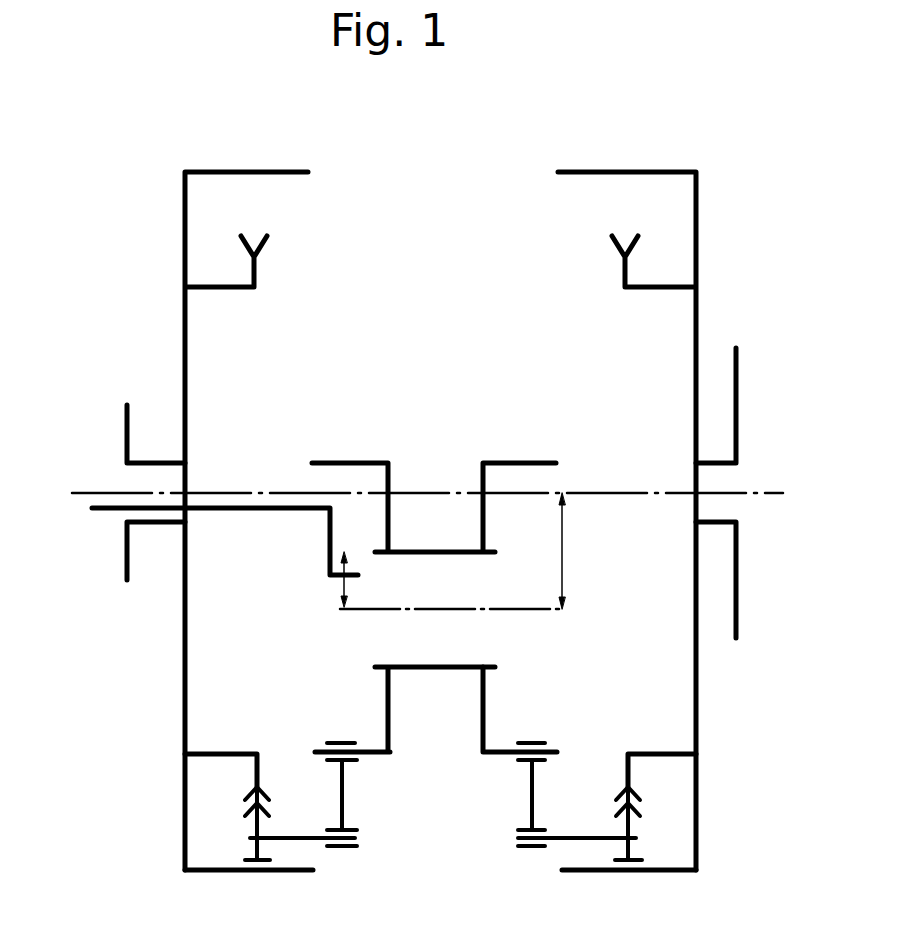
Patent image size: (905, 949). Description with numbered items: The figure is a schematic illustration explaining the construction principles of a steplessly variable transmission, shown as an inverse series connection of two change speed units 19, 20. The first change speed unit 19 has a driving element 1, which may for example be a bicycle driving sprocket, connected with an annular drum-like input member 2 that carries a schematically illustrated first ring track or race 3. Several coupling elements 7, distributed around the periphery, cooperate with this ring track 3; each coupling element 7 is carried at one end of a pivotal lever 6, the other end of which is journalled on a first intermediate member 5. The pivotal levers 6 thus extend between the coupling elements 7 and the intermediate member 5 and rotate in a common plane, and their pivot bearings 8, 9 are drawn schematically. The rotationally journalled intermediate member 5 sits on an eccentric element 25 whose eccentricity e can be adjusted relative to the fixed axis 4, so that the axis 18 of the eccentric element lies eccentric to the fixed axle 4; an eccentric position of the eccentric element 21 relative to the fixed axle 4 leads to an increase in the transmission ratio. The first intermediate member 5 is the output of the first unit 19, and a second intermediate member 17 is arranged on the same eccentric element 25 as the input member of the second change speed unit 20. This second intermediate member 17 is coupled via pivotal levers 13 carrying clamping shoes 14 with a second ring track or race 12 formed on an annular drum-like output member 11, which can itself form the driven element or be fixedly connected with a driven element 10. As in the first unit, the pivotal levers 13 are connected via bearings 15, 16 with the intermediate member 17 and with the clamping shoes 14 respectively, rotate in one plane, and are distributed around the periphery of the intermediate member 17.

The driving element 1 is at (126, 418).
The input member 2 is at (185, 314).
The first ring track 3 is at (256, 790).
The fixed axis 4 is at (76, 490).
The first intermediate member 5 is at (388, 696).
The pivotal lever 6 is at (345, 792).
The coupling element 7 is at (258, 828).
The pivot bearing 8 is at (333, 741).
The pivot bearing 9 is at (340, 850).
The driven element 10 is at (738, 365).
The output member 11 is at (698, 313).
The second ring track 12 is at (634, 790).
The pivotal lever 13 is at (530, 792).
The clamping shoe 14 is at (630, 828).
The bearing 15 is at (538, 742).
The bearing 16 is at (533, 851).
The second intermediate member 17 is at (485, 693).
The axis of the eccentric element 18 is at (535, 612).
The first change speed unit 19 is at (305, 378).
The second change speed unit 20 is at (568, 382).
The eccentric element 21 is at (330, 540).
The eccentric element 25 is at (386, 638).
The eccentricity e is at (564, 546).